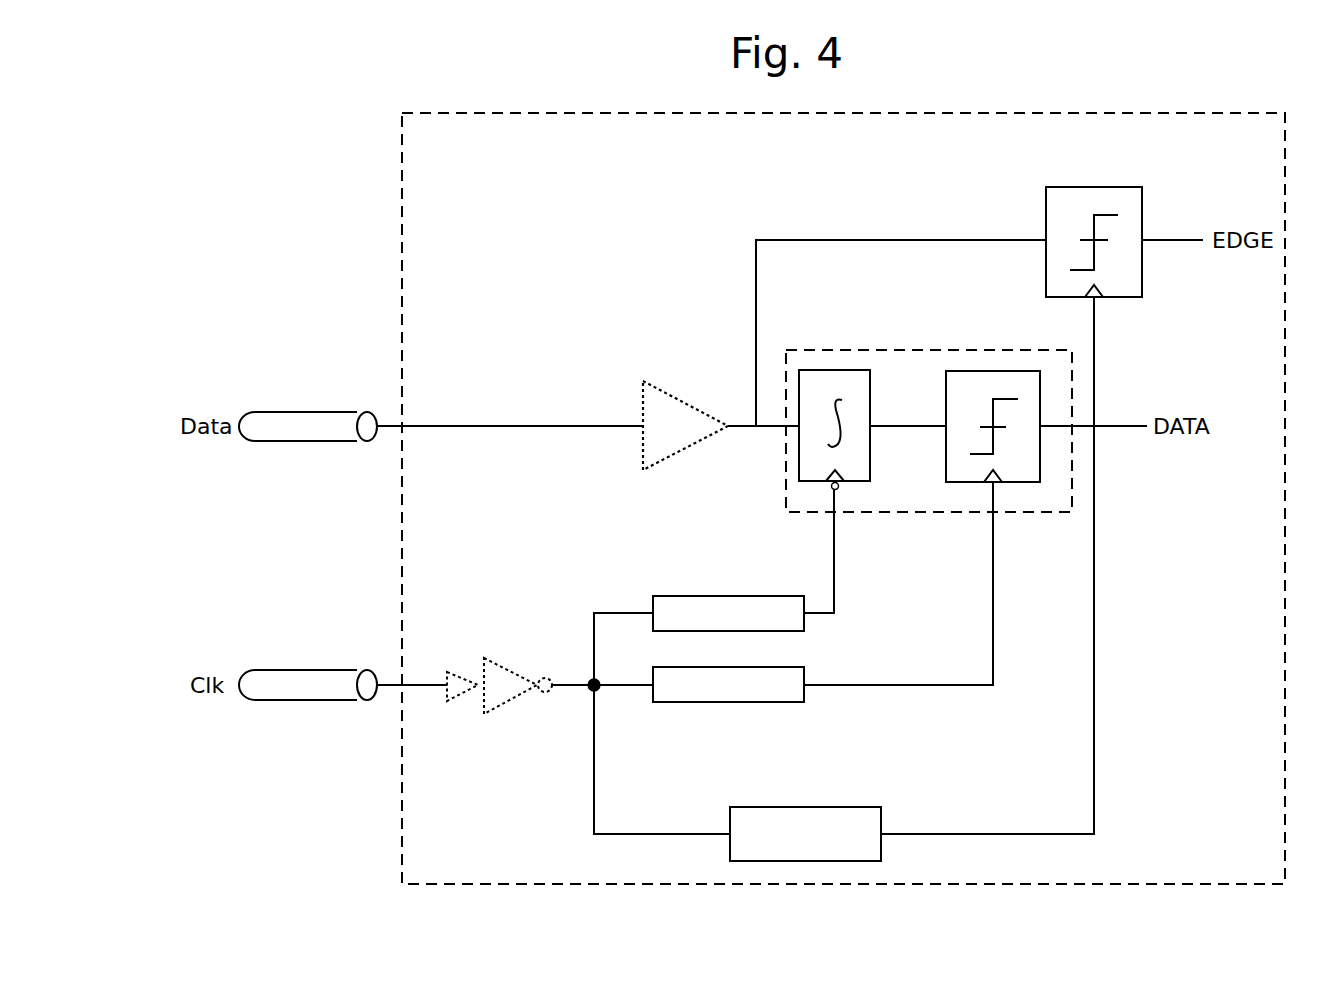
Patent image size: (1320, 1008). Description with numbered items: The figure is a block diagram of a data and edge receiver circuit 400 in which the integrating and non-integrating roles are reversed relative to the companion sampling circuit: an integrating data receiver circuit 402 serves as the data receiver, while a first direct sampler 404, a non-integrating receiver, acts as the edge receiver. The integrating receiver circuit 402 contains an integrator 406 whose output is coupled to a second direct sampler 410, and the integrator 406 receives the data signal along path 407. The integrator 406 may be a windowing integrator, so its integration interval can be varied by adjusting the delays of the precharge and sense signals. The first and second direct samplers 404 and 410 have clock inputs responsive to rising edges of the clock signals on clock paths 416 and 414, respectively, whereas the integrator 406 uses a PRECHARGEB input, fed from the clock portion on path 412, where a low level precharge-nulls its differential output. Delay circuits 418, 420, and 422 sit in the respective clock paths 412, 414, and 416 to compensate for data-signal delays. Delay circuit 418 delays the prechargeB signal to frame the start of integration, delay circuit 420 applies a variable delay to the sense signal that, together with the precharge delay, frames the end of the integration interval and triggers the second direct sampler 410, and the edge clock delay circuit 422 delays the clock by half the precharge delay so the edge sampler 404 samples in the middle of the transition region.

The data and edge receiver circuit 400 is at (1252, 166).
The integrating data receiver circuit 402 is at (925, 348).
The first direct sampler 404 is at (1044, 210).
The integrator 406 is at (855, 368).
The path 407 is at (773, 430).
The second direct sampler 410 is at (1042, 395).
The clock path 412 is at (607, 608).
The clock path 414 is at (940, 683).
The clock path 416 is at (596, 782).
The delay circuit 418 is at (750, 624).
The delay circuit 420 is at (750, 696).
The edge clock delay circuit 422 is at (825, 845).